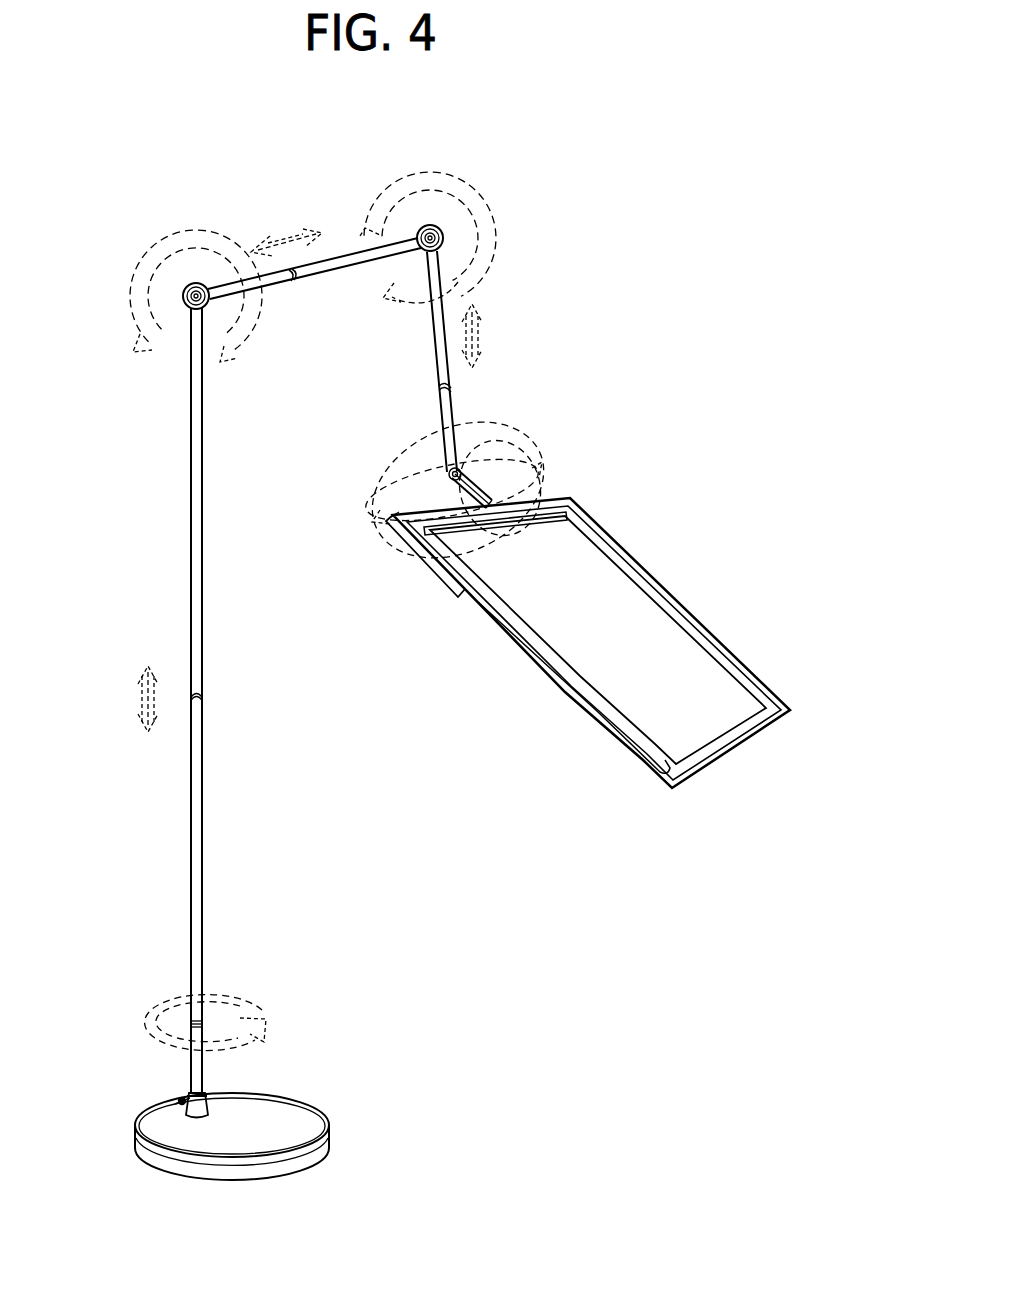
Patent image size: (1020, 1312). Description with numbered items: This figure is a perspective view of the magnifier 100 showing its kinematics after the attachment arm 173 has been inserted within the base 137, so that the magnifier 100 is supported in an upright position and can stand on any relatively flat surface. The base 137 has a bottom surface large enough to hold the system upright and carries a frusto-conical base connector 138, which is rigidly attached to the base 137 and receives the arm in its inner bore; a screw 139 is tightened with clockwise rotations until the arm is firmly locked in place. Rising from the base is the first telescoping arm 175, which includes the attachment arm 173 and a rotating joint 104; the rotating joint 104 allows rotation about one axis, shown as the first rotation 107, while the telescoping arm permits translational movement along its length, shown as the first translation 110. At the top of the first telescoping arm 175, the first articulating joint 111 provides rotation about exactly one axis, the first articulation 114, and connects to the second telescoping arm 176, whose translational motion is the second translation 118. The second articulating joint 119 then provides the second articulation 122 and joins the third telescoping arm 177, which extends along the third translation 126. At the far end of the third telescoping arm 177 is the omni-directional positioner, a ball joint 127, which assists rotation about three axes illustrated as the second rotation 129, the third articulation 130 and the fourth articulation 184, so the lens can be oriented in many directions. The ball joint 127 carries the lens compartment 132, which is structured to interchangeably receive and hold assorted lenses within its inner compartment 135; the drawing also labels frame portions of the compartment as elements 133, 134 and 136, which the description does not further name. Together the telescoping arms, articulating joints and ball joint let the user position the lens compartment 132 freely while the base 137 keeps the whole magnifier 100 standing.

The magnifier 100 is at (583, 262).
The rotating joint 104 is at (206, 1021).
The first rotation 107 is at (150, 1012).
The first translation 110 is at (142, 698).
The first articulating joint 111 is at (192, 310).
The first articulation 114 is at (132, 270).
The second translation 118 is at (289, 233).
The second articulating joint 119 is at (455, 246).
The second articulation 122 is at (478, 195).
The third translation 126 is at (482, 330).
The ball joint 127 is at (446, 473).
The second rotation 129 is at (432, 565).
The third articulation 130 is at (495, 420).
The lens compartment 132 is at (683, 598).
The top rail 133 is at (552, 494).
The display bezel 134 is at (688, 553).
The inner compartment 135 is at (578, 704).
The side edge of display 136 is at (458, 606).
The base 137 is at (300, 1104).
The base connector 138 is at (205, 1095).
The screw 139 is at (180, 1102).
The attachment arm 173 is at (190, 1068).
The first telescoping arm 175 is at (208, 655).
The second telescoping arm 176 is at (323, 274).
The third telescoping arm 177 is at (430, 322).
The fourth articulation 184 is at (538, 478).